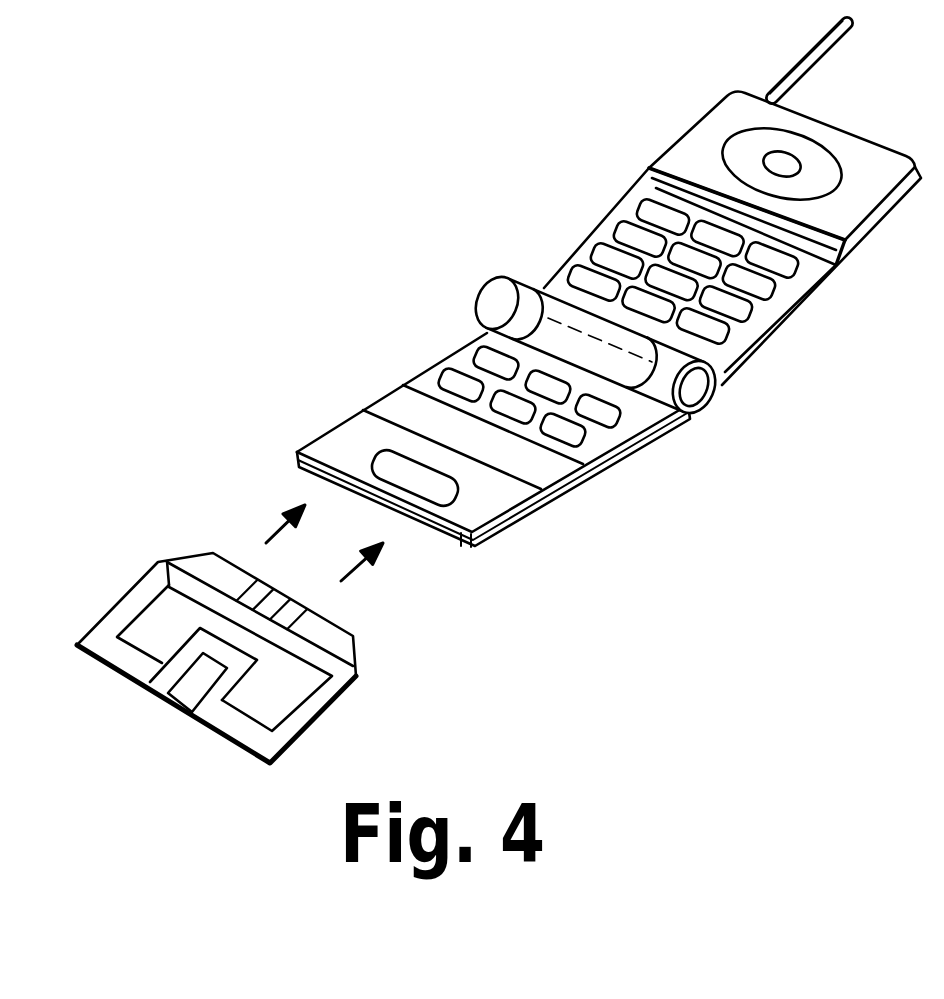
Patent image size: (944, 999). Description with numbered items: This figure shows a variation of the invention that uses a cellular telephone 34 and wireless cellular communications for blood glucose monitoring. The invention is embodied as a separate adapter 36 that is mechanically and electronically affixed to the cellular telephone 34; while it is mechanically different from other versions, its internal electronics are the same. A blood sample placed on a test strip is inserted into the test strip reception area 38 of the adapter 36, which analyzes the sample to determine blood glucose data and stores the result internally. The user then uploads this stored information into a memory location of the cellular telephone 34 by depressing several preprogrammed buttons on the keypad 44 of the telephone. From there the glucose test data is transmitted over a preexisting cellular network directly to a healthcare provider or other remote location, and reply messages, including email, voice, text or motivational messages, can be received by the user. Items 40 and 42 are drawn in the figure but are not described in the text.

The cellular telephone 34 is at (540, 320).
The adapter 36 is at (195, 630).
The test strip reception area 38 is at (180, 693).
The SIM card 40 is at (249, 666).
The card slot in flip cover 42 is at (433, 530).
The keypad 44 is at (636, 272).